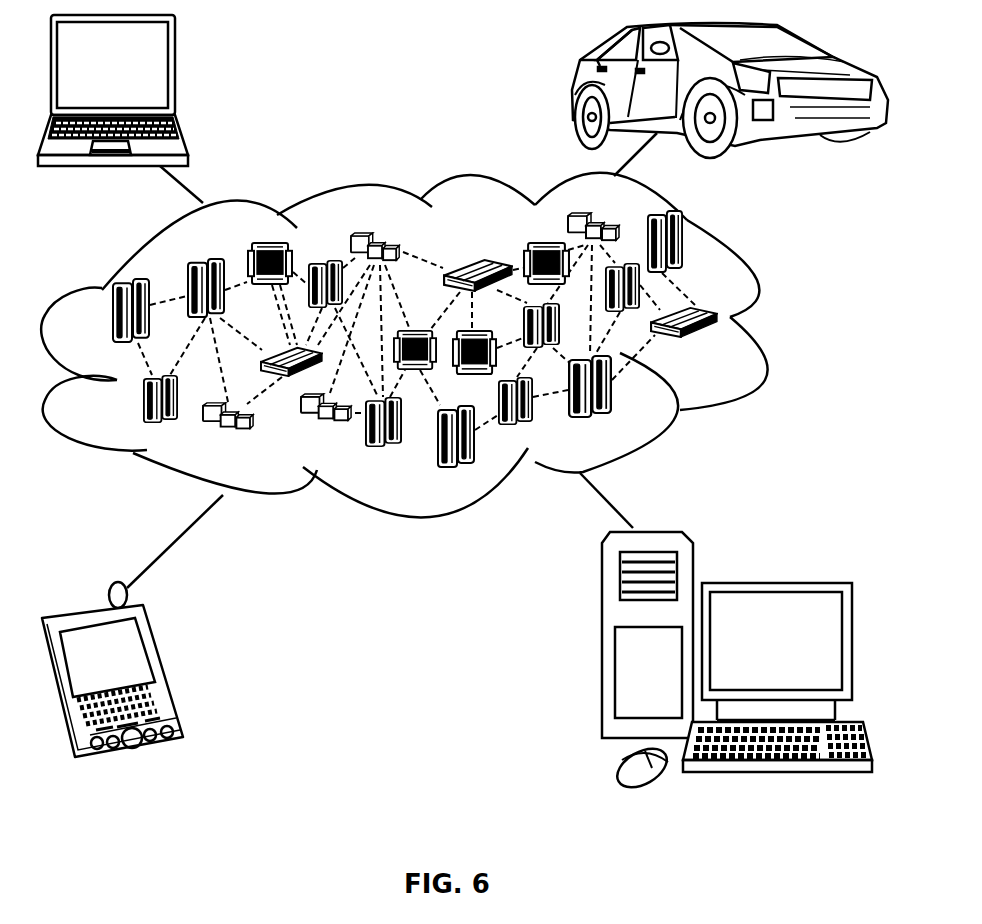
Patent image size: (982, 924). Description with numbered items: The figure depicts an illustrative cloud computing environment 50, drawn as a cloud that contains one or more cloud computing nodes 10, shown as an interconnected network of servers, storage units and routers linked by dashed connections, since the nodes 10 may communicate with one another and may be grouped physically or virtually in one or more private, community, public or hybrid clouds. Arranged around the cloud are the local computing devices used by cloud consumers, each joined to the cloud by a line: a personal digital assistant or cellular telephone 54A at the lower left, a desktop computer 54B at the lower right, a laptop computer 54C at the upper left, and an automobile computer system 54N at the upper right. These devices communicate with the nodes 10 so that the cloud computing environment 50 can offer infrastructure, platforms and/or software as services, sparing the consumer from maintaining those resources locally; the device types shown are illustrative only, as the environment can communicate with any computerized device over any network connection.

The cloud computing environment 50 is at (770, 332).
The cloud computing node 10 is at (735, 352).
The personal digital assistant or cellular telephone 54A is at (167, 668).
The desktop computer 54B is at (772, 583).
The laptop computer 54C is at (175, 70).
The automobile computer system 54N is at (576, 84).